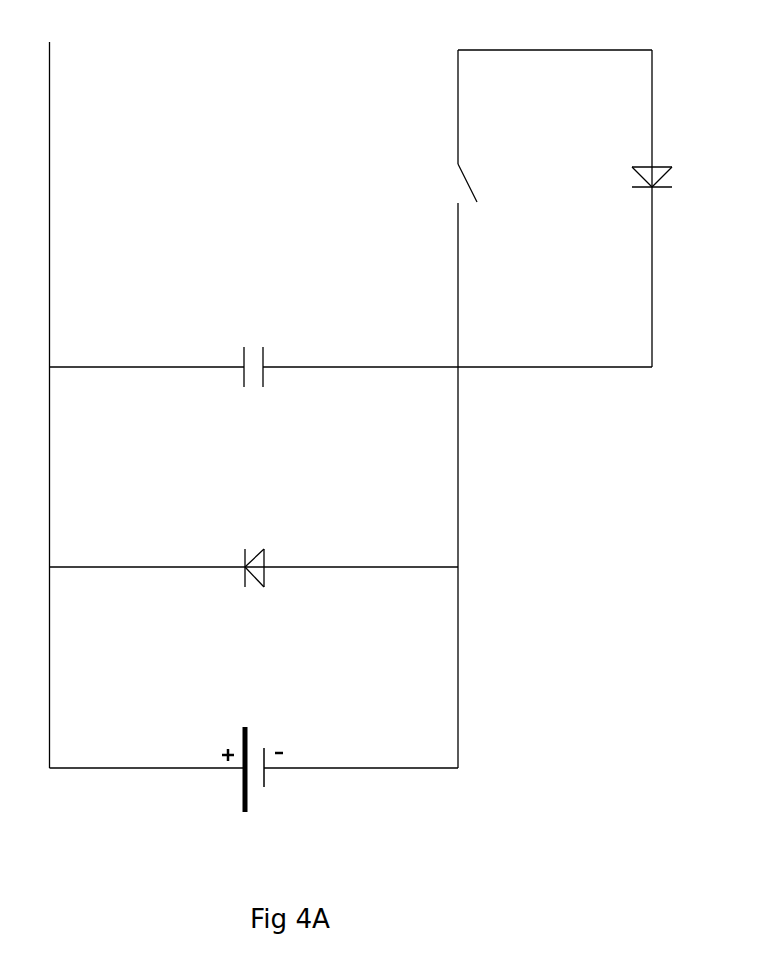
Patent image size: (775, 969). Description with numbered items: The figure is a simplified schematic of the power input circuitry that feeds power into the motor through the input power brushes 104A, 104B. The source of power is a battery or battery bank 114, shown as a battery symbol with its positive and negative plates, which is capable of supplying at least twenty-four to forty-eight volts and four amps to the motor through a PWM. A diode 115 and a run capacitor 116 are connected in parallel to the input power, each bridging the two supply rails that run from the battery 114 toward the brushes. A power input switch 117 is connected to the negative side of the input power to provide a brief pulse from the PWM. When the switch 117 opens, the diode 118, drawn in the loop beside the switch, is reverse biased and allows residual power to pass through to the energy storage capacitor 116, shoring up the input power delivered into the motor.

The input power brush 104A is at (61, 391).
The input power brush 104B is at (542, 191).
The battery or battery bank 114 is at (247, 773).
The diode 115 is at (254, 550).
The run capacitor 116 is at (254, 347).
The power input switch 117 is at (441, 409).
The diode 118 is at (681, 208).